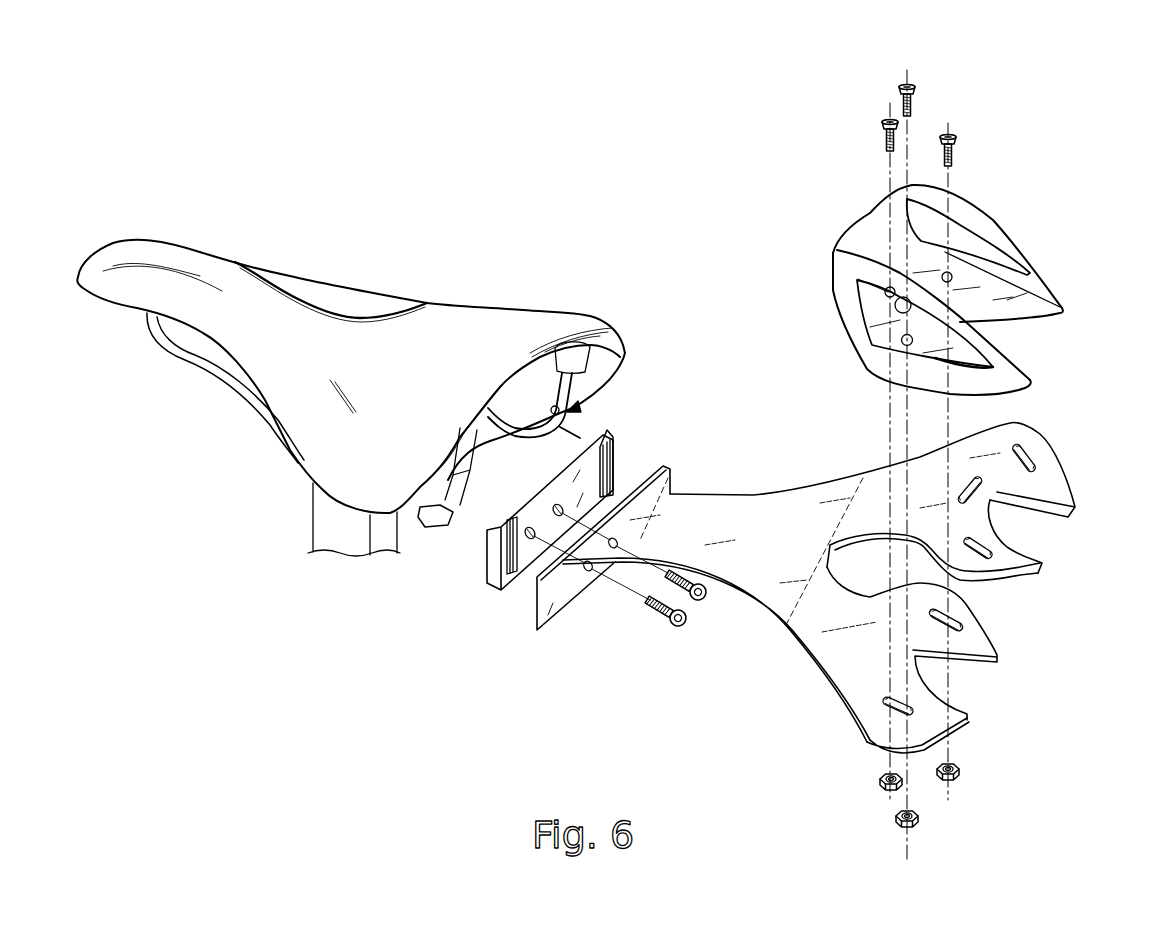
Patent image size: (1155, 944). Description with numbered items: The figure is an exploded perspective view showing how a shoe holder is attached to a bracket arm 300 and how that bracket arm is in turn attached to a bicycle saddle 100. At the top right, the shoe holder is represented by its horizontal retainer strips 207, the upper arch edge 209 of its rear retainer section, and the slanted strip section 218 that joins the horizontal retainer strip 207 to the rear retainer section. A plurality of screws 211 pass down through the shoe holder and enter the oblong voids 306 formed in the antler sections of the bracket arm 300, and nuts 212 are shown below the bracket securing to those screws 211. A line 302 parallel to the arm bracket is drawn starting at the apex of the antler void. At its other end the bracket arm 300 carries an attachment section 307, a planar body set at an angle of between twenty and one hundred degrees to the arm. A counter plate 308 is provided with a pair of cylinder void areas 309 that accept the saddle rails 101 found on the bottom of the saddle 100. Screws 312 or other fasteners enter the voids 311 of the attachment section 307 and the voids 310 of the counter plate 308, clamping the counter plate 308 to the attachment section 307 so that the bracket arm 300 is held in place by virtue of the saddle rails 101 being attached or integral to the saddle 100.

The bicycle saddle 100 is at (422, 384).
The saddle rails 101 is at (182, 352).
The horizontal retainer strips 207 is at (917, 370).
The upper arch edge of rear retainer section 209 is at (870, 227).
The screws 211 is at (880, 123).
The nuts 212 is at (893, 810).
The slanted strip section 218 is at (973, 237).
The bracket arm 300 is at (737, 529).
The line parallel to the arm bracket 302 is at (812, 572).
The oblong voids 306 is at (970, 483).
The attachment section 307 is at (583, 601).
The counter plate 308 is at (540, 480).
The cylinder void areas 309 is at (613, 433).
The voids of counter plate 310 is at (533, 541).
The voids of attachment section 311 is at (588, 568).
The screws 312 is at (697, 601).